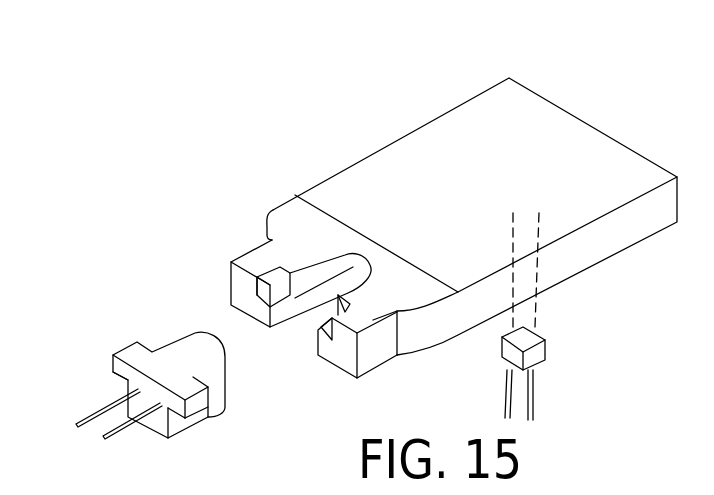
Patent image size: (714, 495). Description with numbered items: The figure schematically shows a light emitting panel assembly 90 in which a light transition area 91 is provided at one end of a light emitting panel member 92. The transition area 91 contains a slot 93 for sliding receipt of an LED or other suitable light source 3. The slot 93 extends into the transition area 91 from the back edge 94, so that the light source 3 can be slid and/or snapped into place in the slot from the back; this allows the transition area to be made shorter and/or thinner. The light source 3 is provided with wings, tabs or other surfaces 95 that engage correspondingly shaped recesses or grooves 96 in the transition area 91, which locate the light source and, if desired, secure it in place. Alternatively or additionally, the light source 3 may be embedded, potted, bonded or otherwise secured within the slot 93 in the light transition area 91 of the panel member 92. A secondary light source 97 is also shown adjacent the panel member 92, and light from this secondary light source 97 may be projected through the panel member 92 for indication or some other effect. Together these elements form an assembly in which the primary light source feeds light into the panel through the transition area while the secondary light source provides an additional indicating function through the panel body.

The light emitting panel assembly 90 is at (340, 153).
The light emitting panel member 92 is at (467, 120).
The light transition area 91 is at (282, 222).
The slot 93 is at (357, 270).
The recesses or grooves 96 is at (268, 274).
The back edge 94 is at (342, 355).
The secondary light source 97 is at (545, 348).
The light source 3 is at (182, 350).
The wings, tabs or other surfaces 95 is at (135, 353).